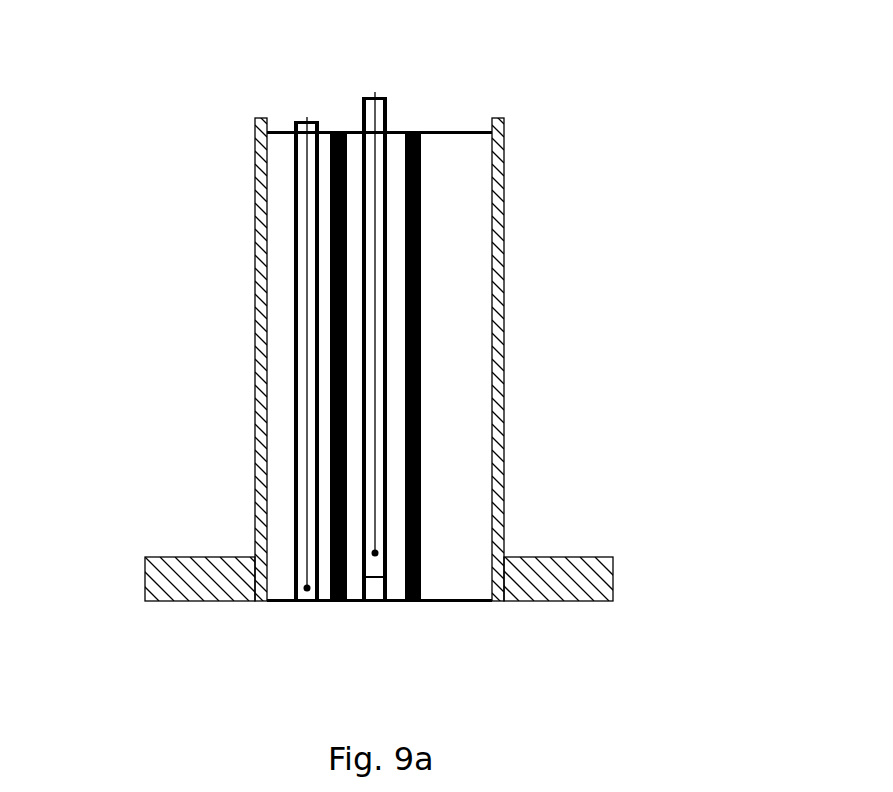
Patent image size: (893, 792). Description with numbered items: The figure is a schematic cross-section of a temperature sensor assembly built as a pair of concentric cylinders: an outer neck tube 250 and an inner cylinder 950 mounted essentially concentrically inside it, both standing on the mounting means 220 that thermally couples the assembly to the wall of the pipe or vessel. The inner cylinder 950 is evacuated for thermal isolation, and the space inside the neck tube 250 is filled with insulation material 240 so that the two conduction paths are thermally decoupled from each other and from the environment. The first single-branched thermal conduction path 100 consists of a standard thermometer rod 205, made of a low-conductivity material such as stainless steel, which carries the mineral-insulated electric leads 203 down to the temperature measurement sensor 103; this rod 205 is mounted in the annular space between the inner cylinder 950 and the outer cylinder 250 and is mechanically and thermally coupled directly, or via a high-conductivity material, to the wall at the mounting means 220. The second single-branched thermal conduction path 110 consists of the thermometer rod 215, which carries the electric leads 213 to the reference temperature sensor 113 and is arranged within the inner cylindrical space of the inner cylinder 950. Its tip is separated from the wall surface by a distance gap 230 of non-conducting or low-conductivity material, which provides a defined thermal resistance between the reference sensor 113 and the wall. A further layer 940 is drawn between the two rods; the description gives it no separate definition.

The first single-branched thermal conduction path 100 is at (218, 343).
The second single-branched thermal conduction path 110 is at (463, 326).
The temperature measurement sensor 103 is at (302, 603).
The reference temperature sensor 113 is at (384, 571).
The electric leads 203 is at (303, 429).
The electric leads 213 is at (376, 427).
The standard thermometer rod 205 is at (285, 131).
The thermometer rod 215 is at (399, 116).
The mounting means 220 is at (622, 590).
The distance gap 230 is at (377, 603).
The insulation material 240 is at (282, 325).
The neck tube 250 is at (252, 238).
The first separator layer 940 is at (390, 297).
The inner cylinder 950 is at (423, 223).